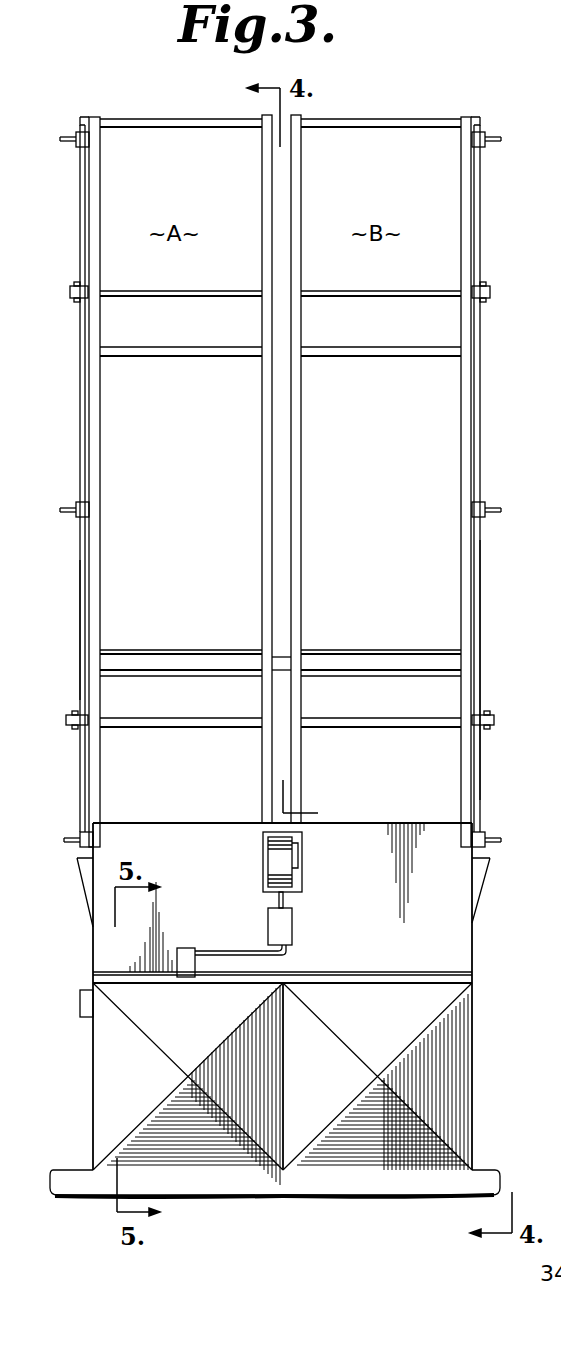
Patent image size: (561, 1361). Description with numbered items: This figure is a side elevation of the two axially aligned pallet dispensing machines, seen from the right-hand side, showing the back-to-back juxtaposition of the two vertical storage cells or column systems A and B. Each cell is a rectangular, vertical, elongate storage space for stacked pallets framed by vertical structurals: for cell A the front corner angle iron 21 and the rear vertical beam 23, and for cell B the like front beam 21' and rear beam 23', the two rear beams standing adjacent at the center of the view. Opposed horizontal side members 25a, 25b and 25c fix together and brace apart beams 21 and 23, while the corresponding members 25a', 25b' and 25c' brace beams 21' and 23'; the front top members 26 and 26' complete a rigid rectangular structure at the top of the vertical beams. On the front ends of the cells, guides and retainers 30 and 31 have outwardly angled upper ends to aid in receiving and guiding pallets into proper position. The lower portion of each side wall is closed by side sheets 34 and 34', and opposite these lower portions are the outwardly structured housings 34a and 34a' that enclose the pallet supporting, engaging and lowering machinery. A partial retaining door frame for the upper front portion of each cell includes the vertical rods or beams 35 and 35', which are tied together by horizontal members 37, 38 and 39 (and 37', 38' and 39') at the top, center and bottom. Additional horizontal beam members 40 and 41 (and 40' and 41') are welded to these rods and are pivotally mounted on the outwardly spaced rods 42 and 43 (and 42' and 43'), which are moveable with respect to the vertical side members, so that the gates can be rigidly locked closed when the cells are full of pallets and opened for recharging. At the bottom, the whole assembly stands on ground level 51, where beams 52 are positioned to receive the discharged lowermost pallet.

The front corner angle iron 21 is at (114, 482).
The front corner angle iron 21' is at (449, 482).
The rear vertical beam 23 is at (240, 469).
The rear vertical beam 23' is at (322, 469).
The horizontal side member 25a is at (181, 108).
The horizontal side member 25a' is at (381, 108).
The horizontal side member 25b is at (181, 370).
The horizontal side member 25b' is at (381, 332).
The horizontal side member 25c is at (181, 647).
The horizontal side member 25c' is at (381, 647).
The front top member 26 is at (69, 101).
The front top member 26' is at (499, 104).
The guide and retainer 30 is at (84, 895).
The guide and retainer 31 is at (482, 892).
The side sheet 34 is at (198, 939).
The side sheet 34' is at (297, 893).
The outwardly structured housing 34a is at (188, 1084).
The outwardly structured housing 34a' is at (377, 1076).
The door frame beam member 35 is at (57, 630).
The door frame beam member 35' is at (506, 670).
The horizontal door member 37 is at (61, 152).
The horizontal door member 37' is at (512, 134).
The horizontal door member 38 is at (62, 496).
The horizontal door member 38' is at (511, 507).
The horizontal door member 39 is at (63, 826).
The horizontal door member 39' is at (513, 834).
The horizontal beam member 40 is at (57, 277).
The horizontal beam member 40' is at (511, 284).
The horizontal beam member 41 is at (60, 709).
The horizontal beam member 41' is at (506, 709).
The outwardly spaced rod 42 is at (181, 307).
The outwardly spaced rod 42' is at (381, 277).
The outwardly spaced rod 43 is at (181, 736).
The outwardly spaced rod 43' is at (381, 736).
The ground level 51 is at (488, 1168).
The beam 52 is at (78, 1166).